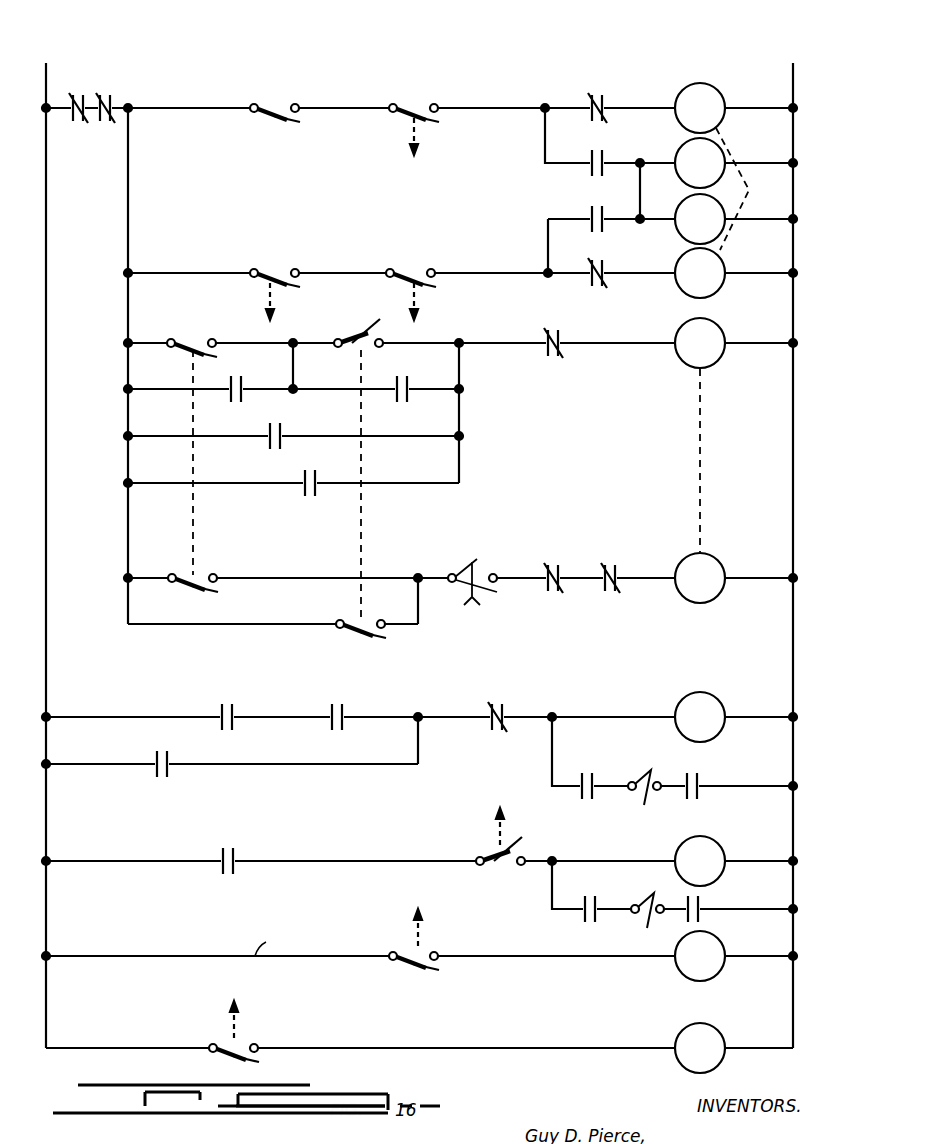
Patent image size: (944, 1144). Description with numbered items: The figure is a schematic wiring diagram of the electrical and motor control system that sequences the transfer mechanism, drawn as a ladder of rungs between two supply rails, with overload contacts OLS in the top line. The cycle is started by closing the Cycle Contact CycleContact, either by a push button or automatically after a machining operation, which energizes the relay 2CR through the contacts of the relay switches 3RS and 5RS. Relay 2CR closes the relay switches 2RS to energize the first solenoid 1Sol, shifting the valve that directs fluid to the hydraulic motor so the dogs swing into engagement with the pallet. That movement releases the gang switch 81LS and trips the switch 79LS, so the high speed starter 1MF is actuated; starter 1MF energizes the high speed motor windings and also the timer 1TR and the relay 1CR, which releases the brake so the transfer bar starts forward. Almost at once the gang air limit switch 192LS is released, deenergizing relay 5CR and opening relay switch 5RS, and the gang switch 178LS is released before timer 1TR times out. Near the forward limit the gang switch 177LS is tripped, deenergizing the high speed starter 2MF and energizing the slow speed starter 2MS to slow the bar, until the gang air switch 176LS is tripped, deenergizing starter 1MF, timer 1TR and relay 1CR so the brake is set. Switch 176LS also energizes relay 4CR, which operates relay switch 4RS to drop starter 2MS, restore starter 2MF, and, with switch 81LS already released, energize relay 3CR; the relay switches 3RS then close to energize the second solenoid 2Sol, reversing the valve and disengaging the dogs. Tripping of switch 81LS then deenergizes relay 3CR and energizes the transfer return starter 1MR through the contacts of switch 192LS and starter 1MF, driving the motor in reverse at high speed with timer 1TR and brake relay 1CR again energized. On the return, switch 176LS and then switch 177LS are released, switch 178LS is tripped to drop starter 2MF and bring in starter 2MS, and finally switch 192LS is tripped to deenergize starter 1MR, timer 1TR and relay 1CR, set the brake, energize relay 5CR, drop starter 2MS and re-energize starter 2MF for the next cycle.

The overload contacts O.L.'S OLS is at (87, 95).
The switch 79LS is at (280, 114).
The gang air switch 176LS is at (418, 110).
The gang switch 81LS is at (272, 276).
The gang air limit switch 192LS is at (422, 252).
The gang switch 177LS is at (190, 347).
The gang switch 178LS is at (358, 336).
The high speed starter 1MF is at (608, 136).
The relay 1CR is at (700, 163).
The timer 1TR is at (488, 548).
The transfer return starter 1MR is at (608, 80).
The high speed starter 2MF is at (700, 435).
The slow speed starter 2MS is at (562, 316).
The relay switch 4RS is at (292, 410).
The relay switch 5RS is at (324, 458).
The Cycle Contact CycleContact is at (250, 694).
The relay switches 3RS is at (512, 690).
The contact relay switches 2RS is at (160, 751).
The solenoid 1Sol is at (651, 770).
The solenoid 2Sol is at (647, 928).
The relay 2CR is at (700, 717).
The relay 3CR is at (700, 861).
The relay 4CR is at (700, 956).
The relay 5CR is at (700, 1048).